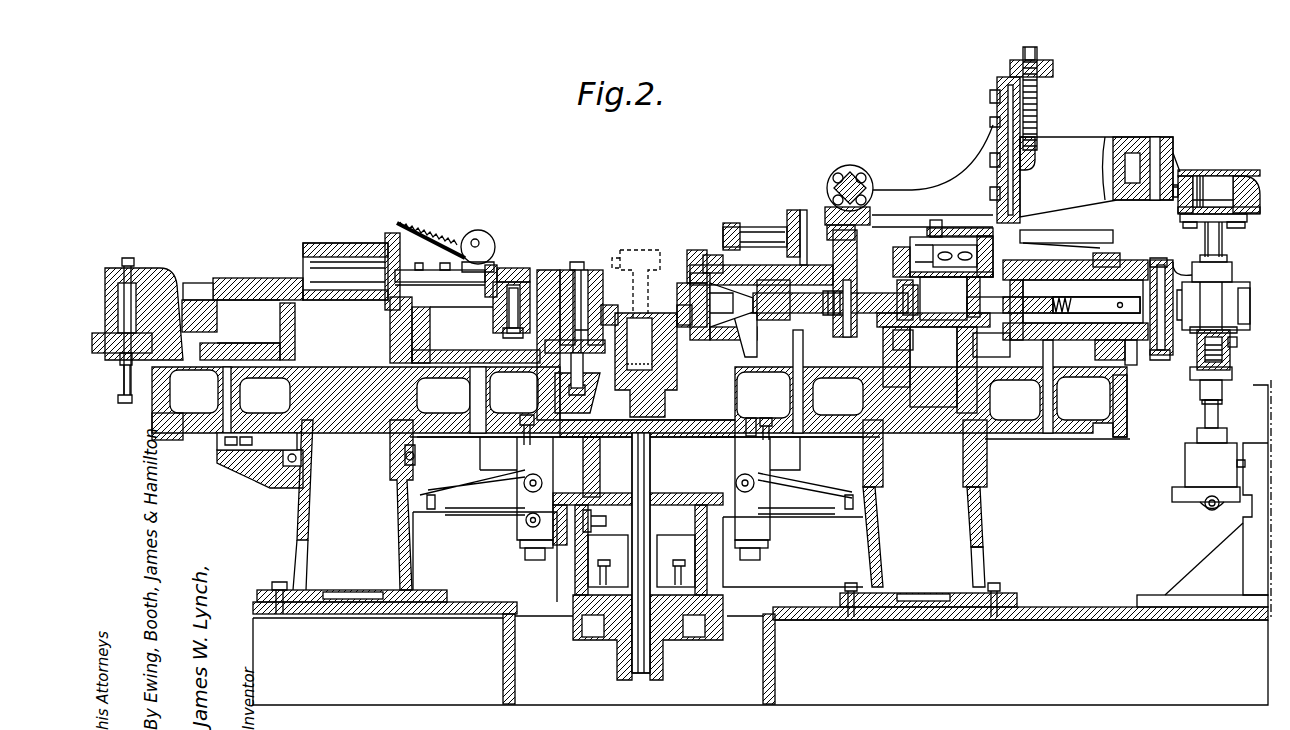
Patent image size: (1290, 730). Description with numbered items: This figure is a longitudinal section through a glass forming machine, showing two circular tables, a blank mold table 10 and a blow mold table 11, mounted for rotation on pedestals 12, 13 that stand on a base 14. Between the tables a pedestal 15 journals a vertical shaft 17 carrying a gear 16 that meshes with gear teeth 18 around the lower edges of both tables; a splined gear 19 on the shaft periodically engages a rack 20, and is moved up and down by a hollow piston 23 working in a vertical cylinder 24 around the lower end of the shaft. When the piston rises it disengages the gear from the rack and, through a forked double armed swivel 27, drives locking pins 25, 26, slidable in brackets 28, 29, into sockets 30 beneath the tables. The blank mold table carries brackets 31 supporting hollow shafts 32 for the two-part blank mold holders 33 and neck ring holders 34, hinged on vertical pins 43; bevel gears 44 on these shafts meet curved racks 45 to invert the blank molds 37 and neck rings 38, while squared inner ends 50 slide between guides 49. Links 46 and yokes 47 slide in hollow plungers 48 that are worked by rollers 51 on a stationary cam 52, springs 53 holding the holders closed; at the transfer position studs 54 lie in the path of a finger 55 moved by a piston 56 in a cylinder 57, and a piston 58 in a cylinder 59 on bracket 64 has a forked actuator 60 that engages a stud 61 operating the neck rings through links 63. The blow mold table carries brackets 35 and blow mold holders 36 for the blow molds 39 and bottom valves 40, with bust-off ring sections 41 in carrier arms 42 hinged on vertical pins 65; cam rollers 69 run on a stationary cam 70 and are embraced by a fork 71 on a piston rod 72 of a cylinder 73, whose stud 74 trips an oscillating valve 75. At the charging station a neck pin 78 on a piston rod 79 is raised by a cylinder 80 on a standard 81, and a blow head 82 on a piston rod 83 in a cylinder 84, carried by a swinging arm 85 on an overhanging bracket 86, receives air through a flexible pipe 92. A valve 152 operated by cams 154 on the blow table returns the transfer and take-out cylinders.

The blank mold table 10 is at (1073, 439).
The blow mold table 11 is at (455, 437).
The pedestal 12 is at (980, 513).
The pedestal 13 is at (385, 517).
The base 14 is at (892, 645).
The pedestal 15 is at (588, 560).
The gear 16 is at (704, 425).
The vertical shaft 17 is at (660, 560).
The gear teeth 18 is at (152, 430).
The splined gear 19 is at (583, 527).
The rack 20 is at (725, 558).
The hollow piston 23 is at (600, 645).
The vertical cylinder 24 is at (665, 648).
The locking pin 25 is at (751, 418).
The locking pin 26 is at (523, 416).
The forked double armed swivel 27 is at (558, 555).
The housing or bracket 28 is at (758, 459).
The housing or bracket 29 is at (517, 457).
The socket 30 is at (205, 440).
The journal or bracket 31 is at (1076, 350).
The hollow shaft or carrier 32 is at (1122, 360).
The blank mold holder 33 is at (1245, 300).
The neck ring holder 34 is at (652, 256).
The bracket 35 is at (537, 378).
The blow mold holder 36 is at (606, 378).
The blank mold 37 is at (1230, 318).
The neck ring 38 is at (1237, 344).
The blow mold 39 is at (661, 368).
The bottom valve 40 is at (665, 392).
The bust-off mold section 41 is at (610, 305).
The carrier arm 42 is at (682, 310).
The vertical pin 43 is at (1160, 258).
The bevel gear 44 is at (1110, 257).
The curved rack or gear segment 45 is at (1105, 242).
The link 46 is at (745, 306).
The yoke 47 is at (742, 343).
The hollow plunger 48 is at (797, 305).
The guide 49 is at (858, 337).
The squared inner end 50 is at (906, 332).
The roller 51 is at (943, 298).
The stationary cam 52 is at (922, 312).
The spring 53 is at (1064, 297).
The stud 54 is at (948, 352).
The radially movable finger 55 is at (893, 262).
The piston 56 is at (982, 230).
The cylinder 57 is at (968, 227).
The piston 58 is at (790, 212).
The cylinder 59 is at (803, 210).
The forked actuator 60 is at (735, 225).
The stud 61 is at (718, 235).
The link 63 is at (705, 256).
The bracket 64 is at (836, 263).
The vertical pin 65 is at (578, 262).
The cam roller 69 is at (502, 312).
The stationary cam 70 is at (226, 283).
The fork 71 is at (512, 268).
The piston rod 72 is at (466, 282).
The cylinder 73 is at (348, 246).
The stud 74 is at (494, 250).
The oscillating valve 75 is at (482, 230).
The neck pin 78 is at (1197, 360).
The piston rod 79 is at (1207, 403).
The cylinder 80 is at (1208, 469).
The standard 81 is at (1250, 541).
The blow head 82 is at (1225, 275).
The piston rod 83 is at (1222, 244).
The cylinder 84 is at (1227, 182).
The swinging arm 85 is at (1195, 172).
The overhanging bracket 86 is at (1065, 152).
The flexible pipe 92 is at (1182, 263).
The valve 152 is at (265, 472).
The cam 154 is at (415, 458).